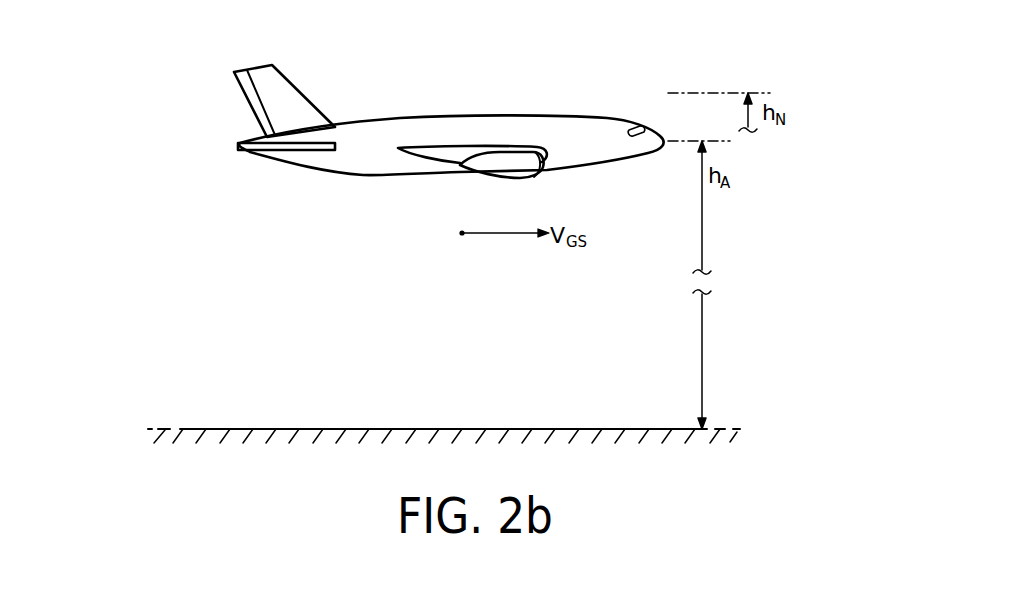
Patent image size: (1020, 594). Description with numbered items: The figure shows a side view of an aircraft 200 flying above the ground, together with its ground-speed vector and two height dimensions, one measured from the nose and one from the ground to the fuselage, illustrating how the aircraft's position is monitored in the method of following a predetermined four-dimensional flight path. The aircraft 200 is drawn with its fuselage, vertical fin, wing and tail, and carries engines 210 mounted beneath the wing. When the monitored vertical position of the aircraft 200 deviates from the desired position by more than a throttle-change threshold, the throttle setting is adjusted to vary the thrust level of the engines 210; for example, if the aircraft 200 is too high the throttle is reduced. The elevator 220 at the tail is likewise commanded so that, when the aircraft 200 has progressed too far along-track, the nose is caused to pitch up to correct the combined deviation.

The aircraft 200 is at (562, 101).
The engines 210 is at (501, 180).
The elevator 220 is at (237, 147).